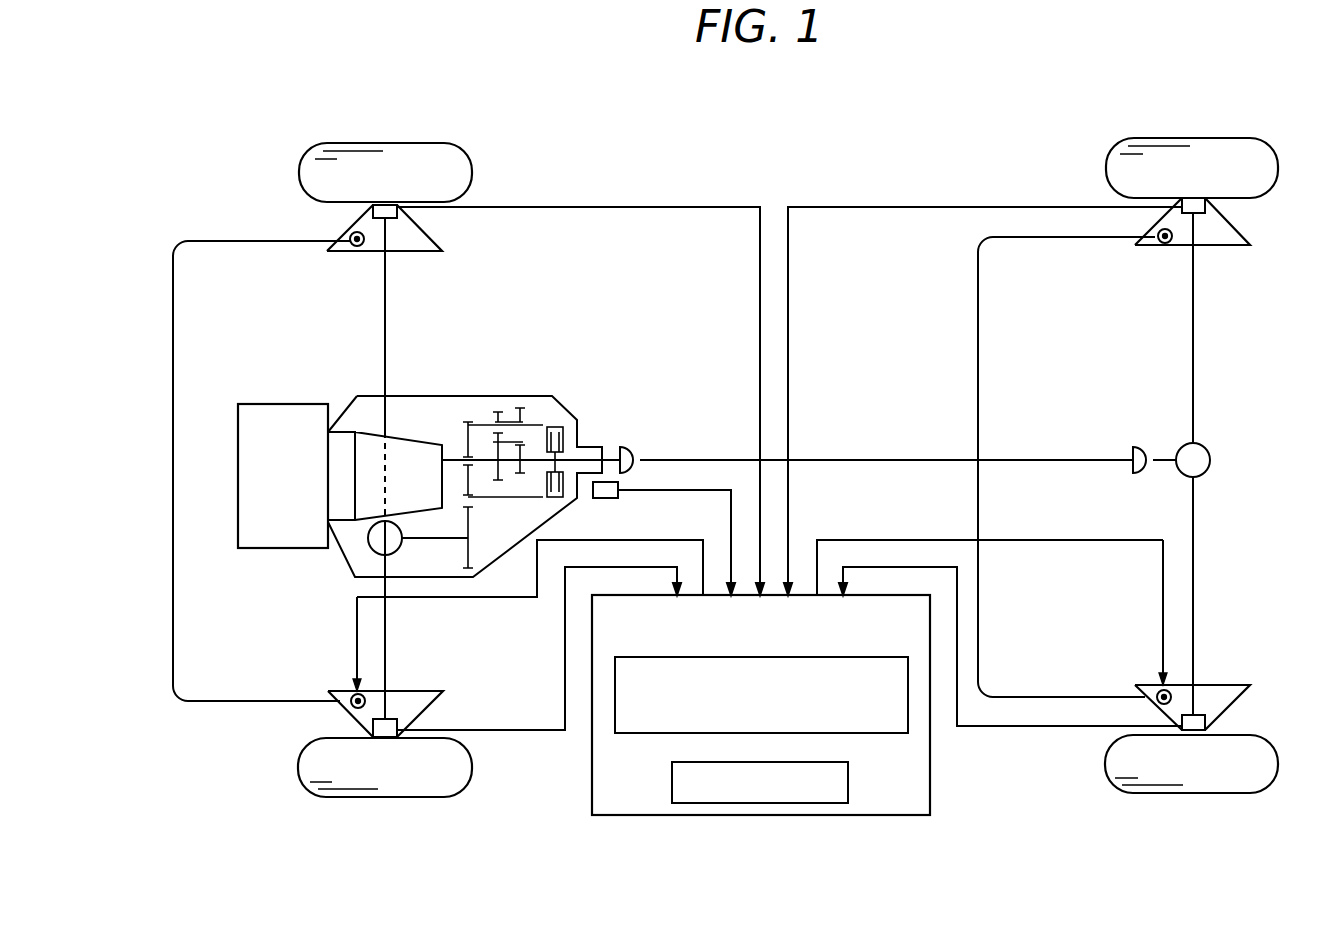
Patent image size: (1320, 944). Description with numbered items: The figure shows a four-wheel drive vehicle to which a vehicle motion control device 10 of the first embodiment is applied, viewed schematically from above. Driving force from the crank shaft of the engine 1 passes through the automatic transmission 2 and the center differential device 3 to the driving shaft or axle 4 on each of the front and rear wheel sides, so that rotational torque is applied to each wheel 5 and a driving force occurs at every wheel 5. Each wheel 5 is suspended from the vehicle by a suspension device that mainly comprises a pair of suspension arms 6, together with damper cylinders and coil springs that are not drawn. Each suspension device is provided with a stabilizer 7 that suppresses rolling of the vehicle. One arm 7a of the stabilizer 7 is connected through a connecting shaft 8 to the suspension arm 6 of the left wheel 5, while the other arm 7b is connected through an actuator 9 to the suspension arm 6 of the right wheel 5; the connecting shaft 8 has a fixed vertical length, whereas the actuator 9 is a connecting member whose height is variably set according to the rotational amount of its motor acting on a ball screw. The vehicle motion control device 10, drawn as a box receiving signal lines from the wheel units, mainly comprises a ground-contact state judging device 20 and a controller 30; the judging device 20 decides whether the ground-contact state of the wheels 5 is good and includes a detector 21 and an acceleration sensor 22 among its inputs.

The engine 1 is at (280, 404).
The automatic transmission 2 is at (372, 432).
The center differential device 3 is at (489, 384).
The driving shaft (axle) 4 is at (384, 332).
The wheel 5 is at (380, 143).
The suspension arm 6 is at (432, 252).
The stabilizer 7 is at (160, 467).
The one arm of the stabilizer 7a is at (272, 700).
The other arm of the stabilizer 7b is at (266, 242).
The connecting shaft 8 is at (352, 691).
The actuator 9 is at (352, 247).
The vehicle motion control device 10 is at (766, 816).
The ground-contact state judging device 20 is at (853, 657).
The detector 21 is at (372, 210).
The acceleration sensor 22 is at (608, 498).
The controller 30 is at (850, 782).